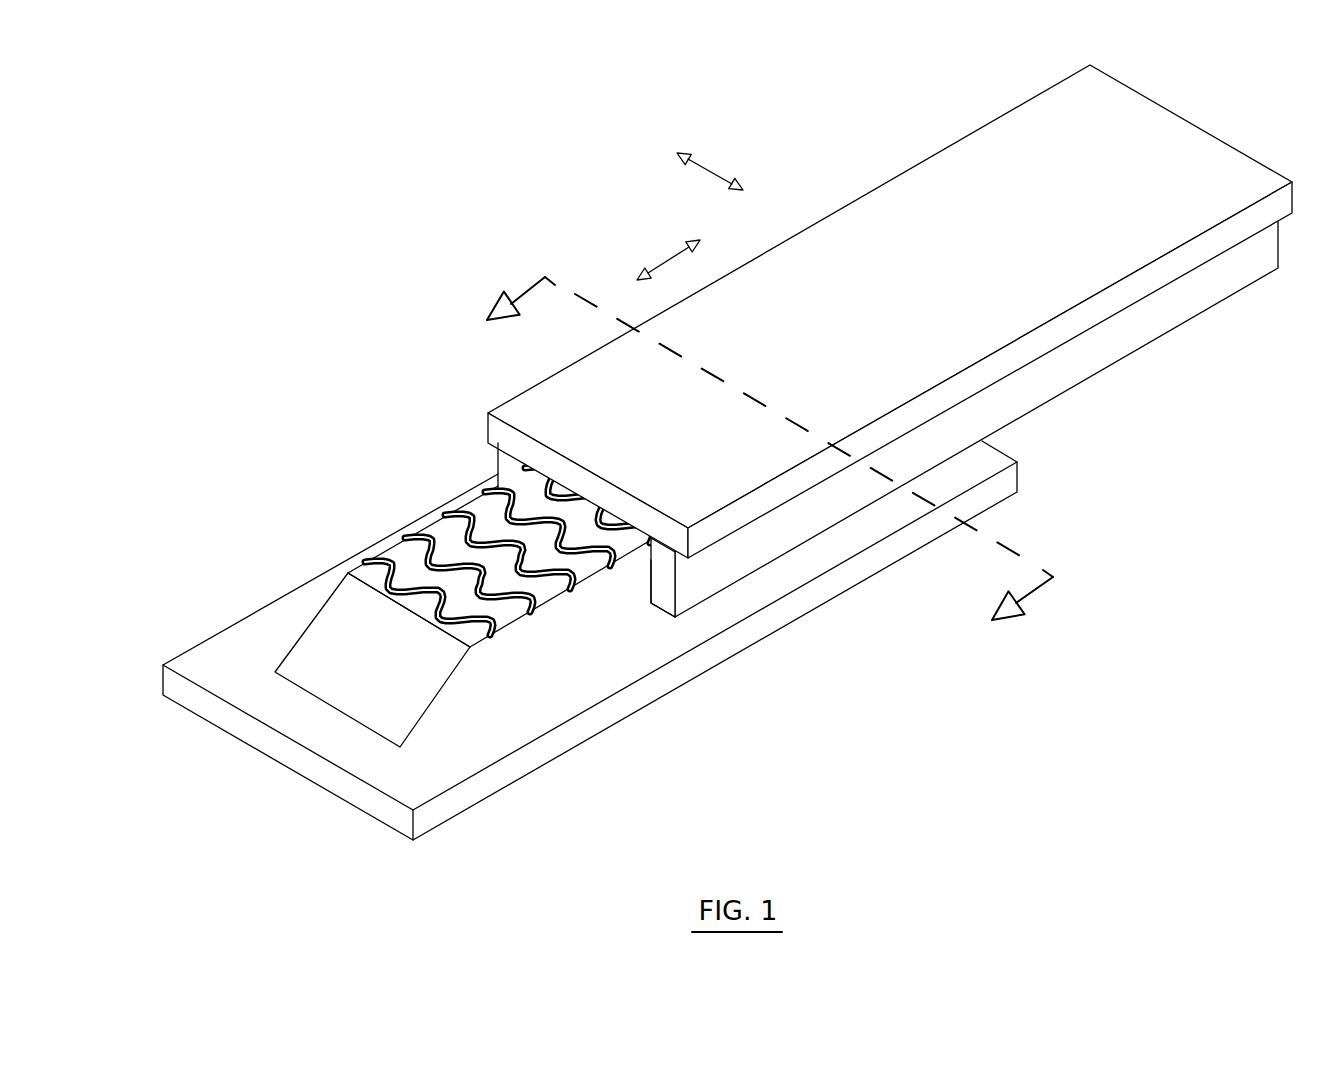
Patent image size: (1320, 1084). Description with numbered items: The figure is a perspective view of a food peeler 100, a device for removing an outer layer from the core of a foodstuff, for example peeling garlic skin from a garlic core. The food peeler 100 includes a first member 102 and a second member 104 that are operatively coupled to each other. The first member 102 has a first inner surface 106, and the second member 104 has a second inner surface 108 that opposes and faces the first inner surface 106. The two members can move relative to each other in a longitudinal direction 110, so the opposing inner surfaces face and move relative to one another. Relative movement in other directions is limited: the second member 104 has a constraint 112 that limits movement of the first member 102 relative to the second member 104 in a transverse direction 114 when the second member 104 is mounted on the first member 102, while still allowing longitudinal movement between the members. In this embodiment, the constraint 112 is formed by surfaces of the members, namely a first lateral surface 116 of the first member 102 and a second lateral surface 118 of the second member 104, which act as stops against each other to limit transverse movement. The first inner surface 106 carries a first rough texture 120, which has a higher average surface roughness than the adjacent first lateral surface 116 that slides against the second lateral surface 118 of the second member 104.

The food peeler 100 is at (492, 218).
The first member 102 is at (221, 543).
The second member 104 is at (888, 136).
The first inner surface 106 is at (399, 550).
The second inner surface 108 is at (558, 467).
The longitudinal direction 110 is at (660, 267).
The constraint 112 is at (667, 563).
The transverse direction 114 is at (710, 170).
The first lateral surface 116 is at (507, 657).
The second lateral surface 118 is at (651, 580).
The first rough texture 120 is at (415, 615).